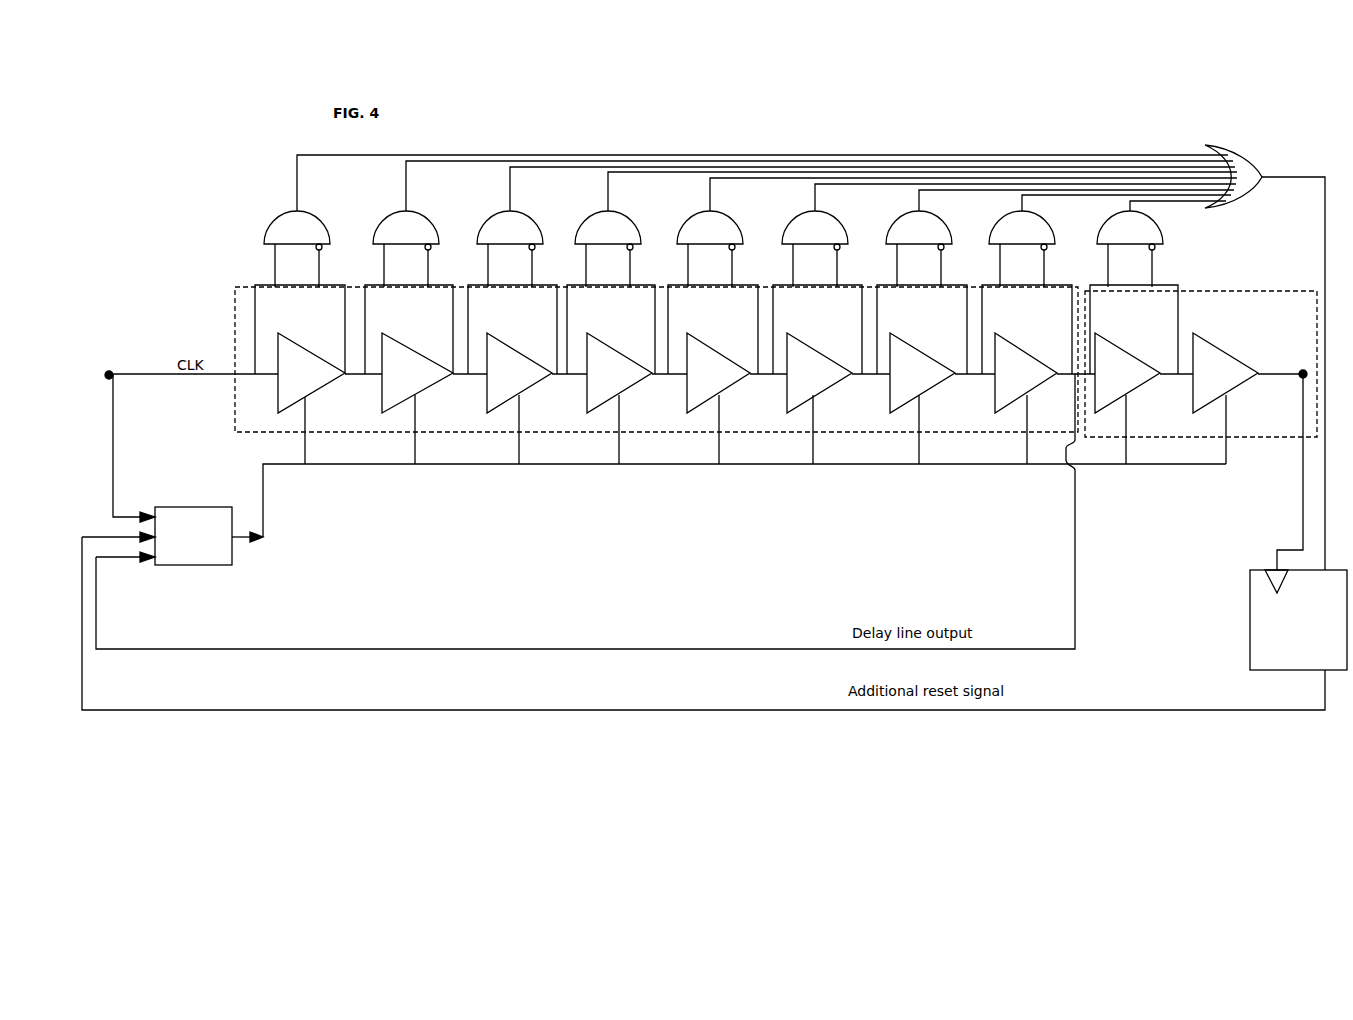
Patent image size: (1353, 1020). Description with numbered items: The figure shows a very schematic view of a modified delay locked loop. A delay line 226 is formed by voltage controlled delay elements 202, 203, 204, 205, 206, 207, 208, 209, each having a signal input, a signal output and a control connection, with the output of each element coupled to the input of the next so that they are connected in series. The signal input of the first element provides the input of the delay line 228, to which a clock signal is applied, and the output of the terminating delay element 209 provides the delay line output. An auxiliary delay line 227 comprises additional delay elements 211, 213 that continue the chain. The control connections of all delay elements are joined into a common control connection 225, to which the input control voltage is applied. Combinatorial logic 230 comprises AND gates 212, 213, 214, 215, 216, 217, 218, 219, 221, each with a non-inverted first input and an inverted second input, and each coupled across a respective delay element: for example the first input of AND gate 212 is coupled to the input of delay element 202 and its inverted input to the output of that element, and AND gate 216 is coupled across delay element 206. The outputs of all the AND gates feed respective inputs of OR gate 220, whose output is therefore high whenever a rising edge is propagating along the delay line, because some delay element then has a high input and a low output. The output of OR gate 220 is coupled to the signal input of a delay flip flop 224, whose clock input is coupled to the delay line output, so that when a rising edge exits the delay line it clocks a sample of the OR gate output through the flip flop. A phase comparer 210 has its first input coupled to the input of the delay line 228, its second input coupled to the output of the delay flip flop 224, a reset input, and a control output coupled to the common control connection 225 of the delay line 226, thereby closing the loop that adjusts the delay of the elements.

The voltage controlled delay element 202 is at (300, 374).
The voltage controlled delay element 203 is at (409, 374).
The voltage controlled delay element 204 is at (512, 374).
The voltage controlled delay element 205 is at (611, 374).
The voltage controlled delay element 206 is at (713, 374).
The voltage controlled delay element 207 is at (817, 374).
The voltage controlled delay element 208 is at (922, 374).
The voltage controlled delay element 209 is at (1027, 374).
The phase comparer 210 is at (209, 536).
The additional delay element 211 is at (1134, 374).
The AND gate 212 is at (746, 221).
The AND gate / additional delay element 213 is at (815, 312).
The AND gate 214 is at (856, 227).
The AND gate 215 is at (906, 229).
The AND gate 216 is at (957, 232).
The AND gate 217 is at (1009, 235).
The AND gate 218 is at (1060, 238).
The AND gate 219 is at (1110, 241).
The OR gate 220 is at (1265, 346).
The AND gate 221 is at (1161, 244).
The delay flip flop 224 is at (1298, 620).
The common control connection 225 is at (744, 491).
The delay line 226 is at (229, 323).
The auxiliary delay line 227 is at (1266, 283).
The input of the delay line 228 is at (99, 361).
The combinatorial logic 230 is at (846, 136).